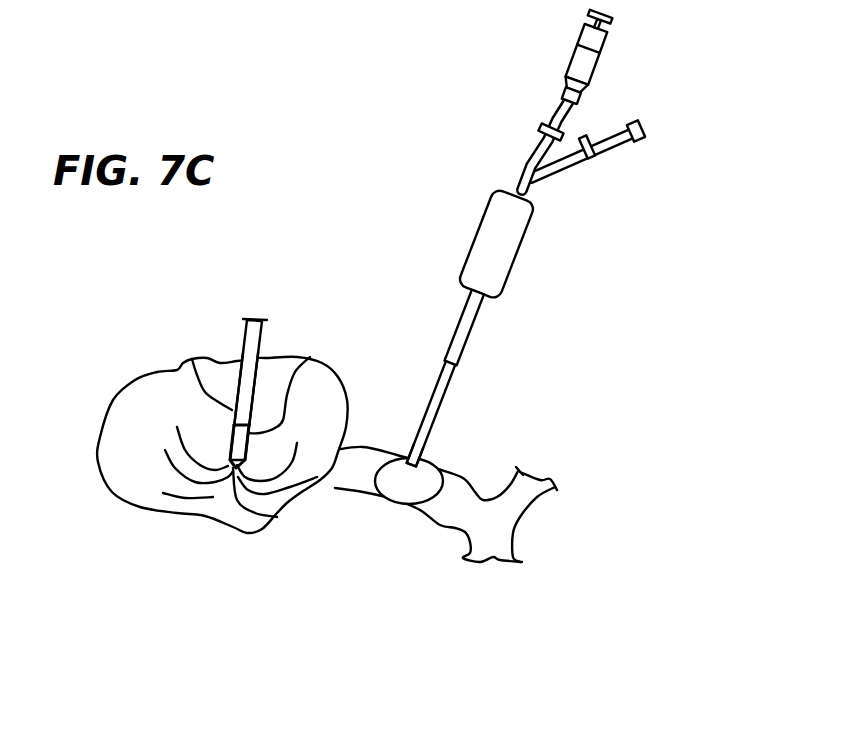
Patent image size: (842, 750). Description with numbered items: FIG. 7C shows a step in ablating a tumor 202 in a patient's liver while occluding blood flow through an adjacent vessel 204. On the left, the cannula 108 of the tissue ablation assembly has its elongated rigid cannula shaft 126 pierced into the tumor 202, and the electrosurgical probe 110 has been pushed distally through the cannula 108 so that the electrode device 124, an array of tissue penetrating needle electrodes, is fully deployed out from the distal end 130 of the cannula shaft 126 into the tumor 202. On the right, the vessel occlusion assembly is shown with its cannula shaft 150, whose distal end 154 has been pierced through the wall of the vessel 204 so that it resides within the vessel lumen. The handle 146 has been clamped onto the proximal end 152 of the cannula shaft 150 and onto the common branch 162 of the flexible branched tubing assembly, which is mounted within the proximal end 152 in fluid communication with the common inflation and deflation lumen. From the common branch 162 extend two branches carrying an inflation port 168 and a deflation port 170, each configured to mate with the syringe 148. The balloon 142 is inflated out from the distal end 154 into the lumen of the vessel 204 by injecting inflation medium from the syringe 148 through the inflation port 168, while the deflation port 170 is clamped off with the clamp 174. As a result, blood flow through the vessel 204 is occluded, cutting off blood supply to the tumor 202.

The cannula 108 is at (267, 332).
The electrosurgical probe 110 is at (310, 357).
The electrode device 124 is at (200, 497).
The cannula shaft 126 is at (243, 352).
The distal end 130 is at (192, 360).
The occlusive device 142 is at (463, 478).
The handle 146 is at (508, 240).
The syringe 148 is at (600, 52).
The cannula shaft 150 is at (443, 365).
The proximal end 152 is at (468, 322).
The distal end 154 is at (410, 452).
The common branch 162 is at (537, 186).
The inflation port 168 is at (580, 98).
The deflation port 170 is at (643, 133).
The clamp 174 is at (592, 157).
The tumor 202 is at (117, 418).
The vessel 204 is at (370, 497).